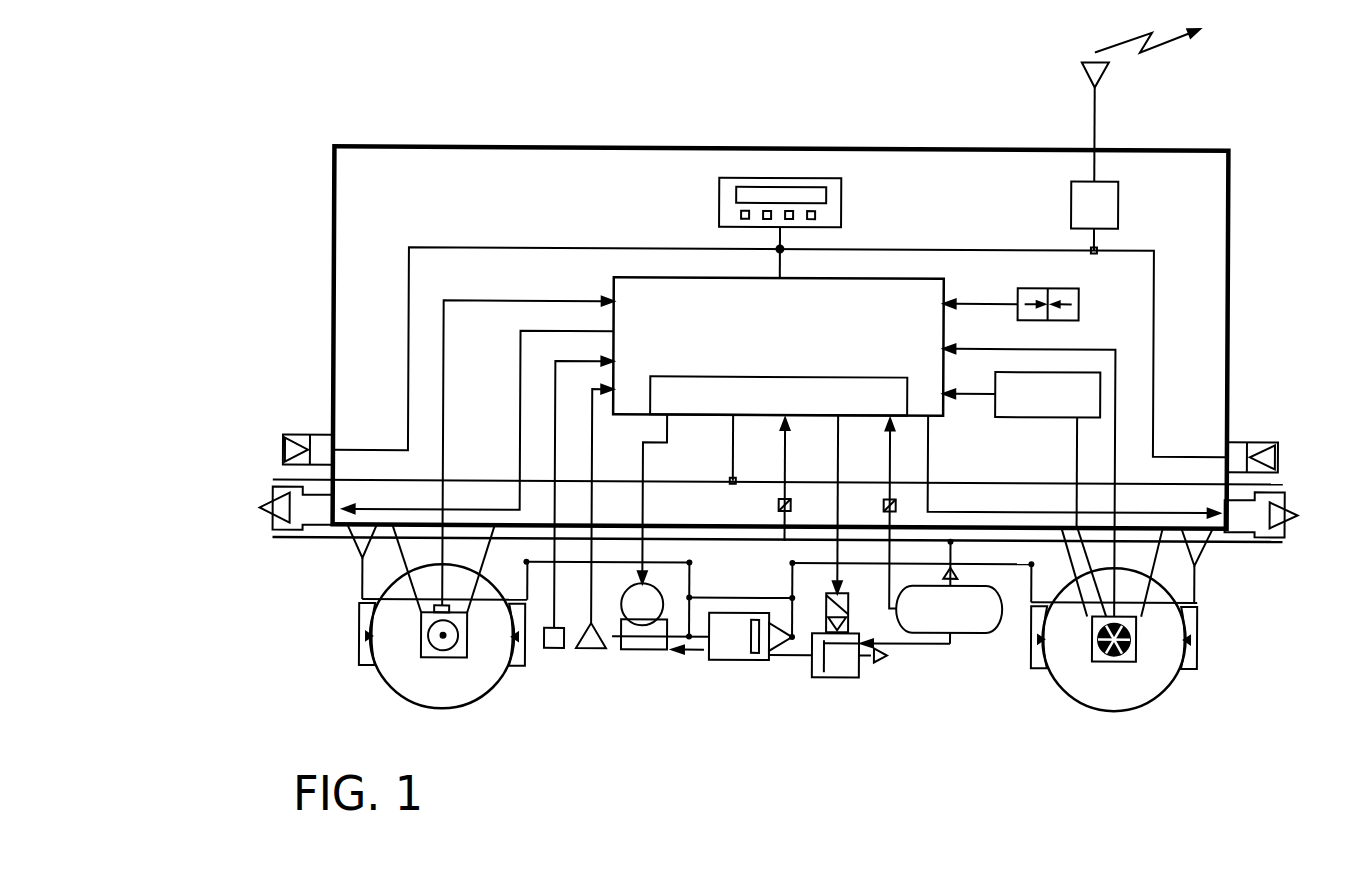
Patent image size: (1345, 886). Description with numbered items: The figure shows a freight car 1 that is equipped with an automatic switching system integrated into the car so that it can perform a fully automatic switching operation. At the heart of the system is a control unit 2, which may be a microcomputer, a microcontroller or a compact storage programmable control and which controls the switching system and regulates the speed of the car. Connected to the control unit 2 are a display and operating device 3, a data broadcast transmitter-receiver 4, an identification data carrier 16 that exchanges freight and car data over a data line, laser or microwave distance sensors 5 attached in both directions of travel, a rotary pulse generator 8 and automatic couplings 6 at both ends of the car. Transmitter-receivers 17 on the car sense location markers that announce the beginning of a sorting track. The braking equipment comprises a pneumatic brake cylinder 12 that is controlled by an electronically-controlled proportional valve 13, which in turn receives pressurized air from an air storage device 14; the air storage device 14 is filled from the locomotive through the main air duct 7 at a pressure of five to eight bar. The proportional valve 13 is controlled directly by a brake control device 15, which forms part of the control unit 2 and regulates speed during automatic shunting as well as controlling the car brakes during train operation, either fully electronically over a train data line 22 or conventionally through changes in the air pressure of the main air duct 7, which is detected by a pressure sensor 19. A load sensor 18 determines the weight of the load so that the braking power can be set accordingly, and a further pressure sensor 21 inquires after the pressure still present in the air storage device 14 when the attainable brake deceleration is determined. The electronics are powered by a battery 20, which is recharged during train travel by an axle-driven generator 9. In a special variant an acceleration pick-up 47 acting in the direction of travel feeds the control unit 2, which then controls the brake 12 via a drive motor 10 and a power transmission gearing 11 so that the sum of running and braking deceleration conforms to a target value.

The freight car 1 is at (800, 133).
The control unit 2 is at (792, 346).
The display and operating device 3 is at (717, 206).
The data broadcast transmitter-receiver 4 is at (1135, 128).
The distance sensor 5 is at (307, 437).
The automatic coupling 6 is at (268, 502).
The main air duct 7 is at (1251, 546).
The rotary pulse generator 8 is at (1138, 657).
The axle-driven generator 9 is at (1092, 657).
The drive motor 10 is at (642, 604).
The power transmission gearing 11 is at (646, 653).
The pneumatic brake cylinder 12 is at (752, 661).
The proportional valve 13 is at (838, 680).
The air storage device 14 is at (949, 593).
The brake control device 15 is at (778, 395).
The identification data carrier 16 is at (556, 655).
The transmitter-receiver 17 is at (594, 655).
The load sensor 18 is at (435, 609).
The pressure sensor 19 is at (779, 505).
The battery 20 is at (1047, 395).
The pressure sensor 21 is at (884, 505).
The train data line 22 is at (1014, 481).
The acceleration pick-up 47 is at (1082, 309).